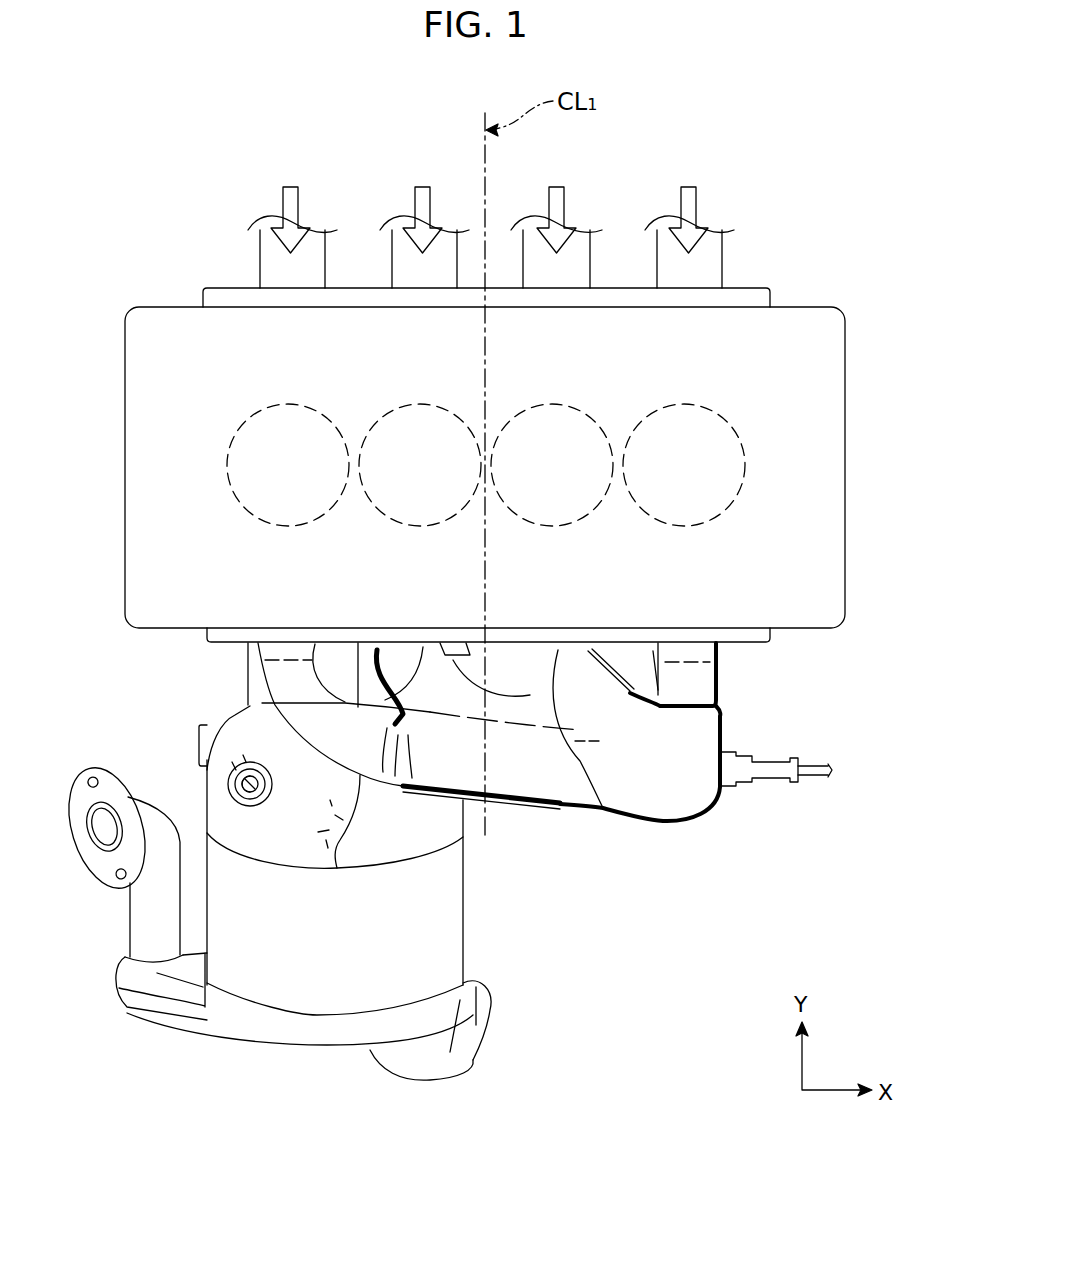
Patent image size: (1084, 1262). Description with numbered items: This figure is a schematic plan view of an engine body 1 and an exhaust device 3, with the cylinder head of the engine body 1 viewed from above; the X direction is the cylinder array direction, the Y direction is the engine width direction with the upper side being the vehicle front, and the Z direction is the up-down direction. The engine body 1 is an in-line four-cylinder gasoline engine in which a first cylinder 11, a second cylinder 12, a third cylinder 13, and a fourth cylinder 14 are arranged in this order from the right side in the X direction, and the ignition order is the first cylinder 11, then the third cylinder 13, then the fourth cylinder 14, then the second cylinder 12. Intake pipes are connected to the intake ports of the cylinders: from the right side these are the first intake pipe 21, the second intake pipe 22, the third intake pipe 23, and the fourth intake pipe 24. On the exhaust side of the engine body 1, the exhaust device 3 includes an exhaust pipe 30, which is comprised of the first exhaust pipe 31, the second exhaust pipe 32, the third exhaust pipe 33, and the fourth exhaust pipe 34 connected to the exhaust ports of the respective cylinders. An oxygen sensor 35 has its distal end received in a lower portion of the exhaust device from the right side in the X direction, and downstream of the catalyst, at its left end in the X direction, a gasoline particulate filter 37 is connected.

The engine body 1 is at (846, 570).
The exhaust device 3 is at (851, 812).
The #1 cylinder 11 is at (745, 452).
The #2 cylinder 12 is at (572, 405).
The #3 cylinder 13 is at (398, 405).
The #4 cylinder 14 is at (228, 453).
The #1 intake pipe 21 is at (722, 250).
The #2 intake pipe 22 is at (590, 255).
The #3 intake pipe 23 is at (392, 255).
The #4 intake pipe 24 is at (260, 250).
The exhaust pipe 30 is at (720, 735).
The #1 exhaust pipe 31 is at (695, 688).
The #2 exhaust pipe 32 is at (603, 812).
The #3 exhaust pipe 33 is at (250, 705).
The #4 exhaust pipe 34 is at (287, 667).
The O2 sensor 35 is at (728, 780).
The gasoline particulate filter (GPF) 37 is at (320, 965).